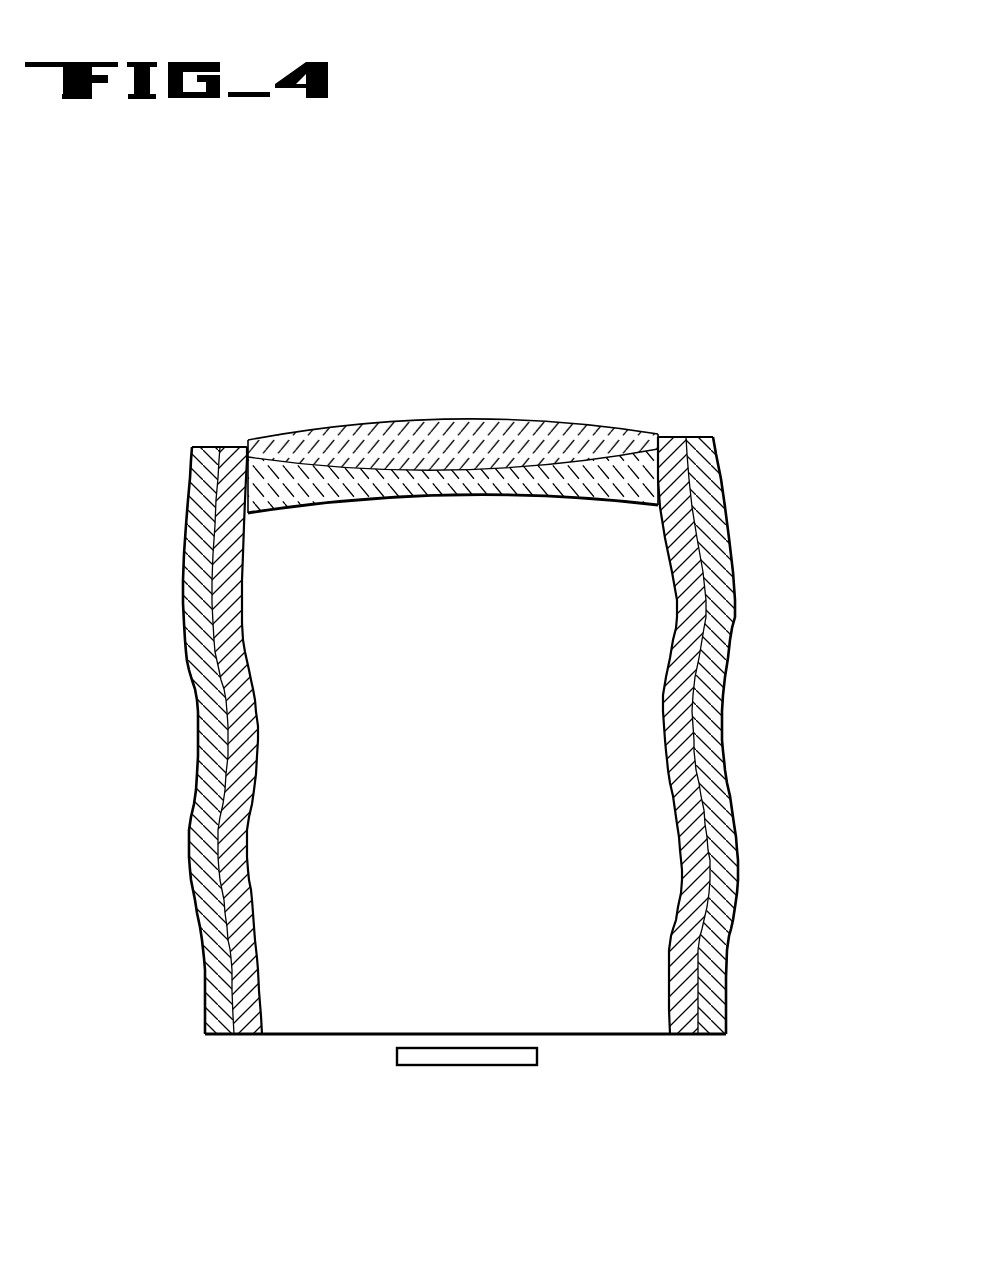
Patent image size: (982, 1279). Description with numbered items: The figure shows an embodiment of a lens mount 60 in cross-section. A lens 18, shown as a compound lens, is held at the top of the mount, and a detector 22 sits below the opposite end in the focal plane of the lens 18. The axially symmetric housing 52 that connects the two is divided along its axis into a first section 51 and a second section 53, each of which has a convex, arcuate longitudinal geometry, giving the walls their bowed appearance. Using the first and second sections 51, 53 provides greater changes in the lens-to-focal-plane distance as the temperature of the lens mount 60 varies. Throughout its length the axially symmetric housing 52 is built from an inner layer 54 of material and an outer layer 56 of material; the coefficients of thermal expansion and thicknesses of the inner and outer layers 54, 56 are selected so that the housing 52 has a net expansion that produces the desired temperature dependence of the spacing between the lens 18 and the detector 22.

The lens 18 is at (498, 452).
The detector 22 is at (487, 1065).
The first section 51 is at (182, 603).
The axially symmetric housing 52 is at (205, 1037).
The second section 53 is at (185, 866).
The inner layer 54 is at (693, 898).
The outer layer 56 is at (717, 816).
The lens mount 60 is at (760, 484).